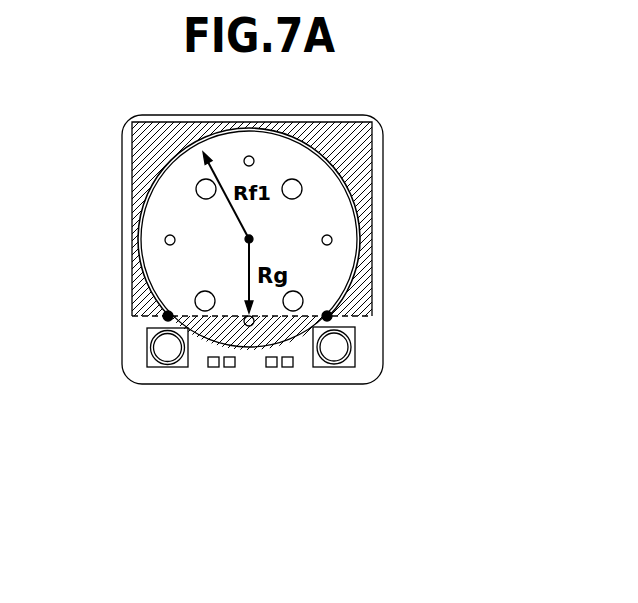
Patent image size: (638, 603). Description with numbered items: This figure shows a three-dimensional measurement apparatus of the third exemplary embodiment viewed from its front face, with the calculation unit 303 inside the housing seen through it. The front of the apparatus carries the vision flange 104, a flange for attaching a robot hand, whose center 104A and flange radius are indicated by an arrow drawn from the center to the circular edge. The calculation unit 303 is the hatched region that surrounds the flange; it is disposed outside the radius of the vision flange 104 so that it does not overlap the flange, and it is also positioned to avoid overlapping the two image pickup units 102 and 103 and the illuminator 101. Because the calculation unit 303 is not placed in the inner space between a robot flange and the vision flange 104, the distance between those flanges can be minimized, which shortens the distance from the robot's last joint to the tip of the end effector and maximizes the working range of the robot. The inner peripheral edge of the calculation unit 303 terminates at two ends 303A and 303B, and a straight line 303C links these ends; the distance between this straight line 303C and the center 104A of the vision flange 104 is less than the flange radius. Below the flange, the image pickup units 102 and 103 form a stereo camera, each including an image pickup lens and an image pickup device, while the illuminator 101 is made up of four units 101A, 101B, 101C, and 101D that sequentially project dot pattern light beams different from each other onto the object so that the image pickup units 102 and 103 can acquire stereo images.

The vision flange 104 is at (366, 134).
The calculation unit 303 is at (145, 158).
The center of the vision flange 104A is at (250, 238).
The straight line 303C is at (194, 316).
The end of the inner peripheral edge 303A is at (168, 316).
The end of the inner peripheral edge 303B is at (327, 316).
The image pickup unit 103 is at (163, 347).
The image pickup unit 102 is at (338, 347).
The illuminator 101 is at (248, 440).
The unit 101A is at (212, 368).
The unit 101B is at (231, 368).
The unit 101C is at (268, 368).
The unit 101D is at (316, 417).